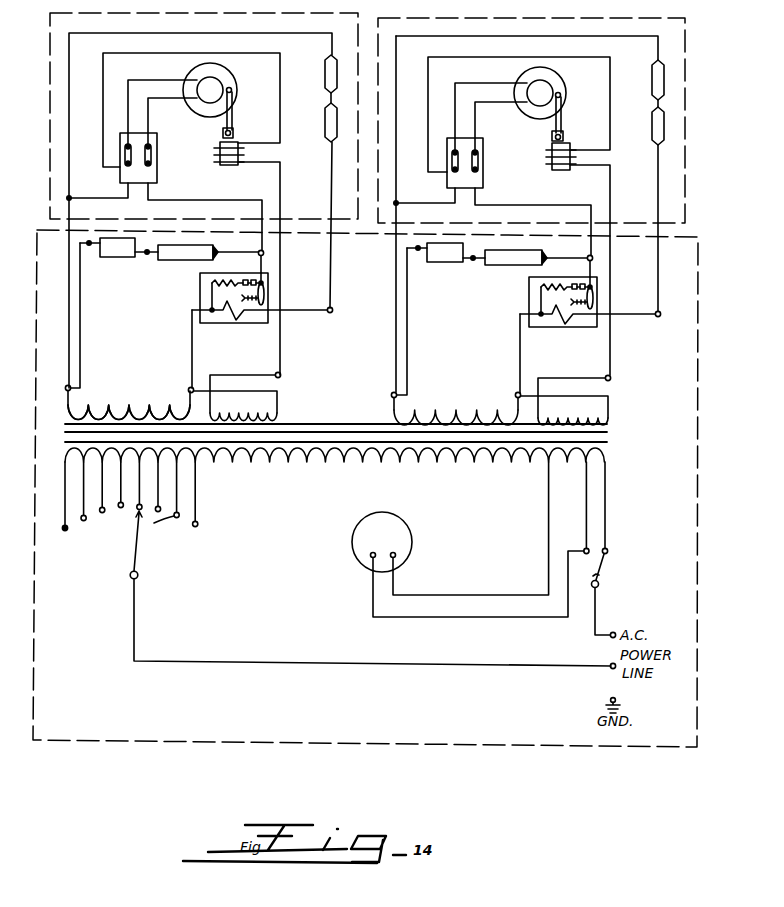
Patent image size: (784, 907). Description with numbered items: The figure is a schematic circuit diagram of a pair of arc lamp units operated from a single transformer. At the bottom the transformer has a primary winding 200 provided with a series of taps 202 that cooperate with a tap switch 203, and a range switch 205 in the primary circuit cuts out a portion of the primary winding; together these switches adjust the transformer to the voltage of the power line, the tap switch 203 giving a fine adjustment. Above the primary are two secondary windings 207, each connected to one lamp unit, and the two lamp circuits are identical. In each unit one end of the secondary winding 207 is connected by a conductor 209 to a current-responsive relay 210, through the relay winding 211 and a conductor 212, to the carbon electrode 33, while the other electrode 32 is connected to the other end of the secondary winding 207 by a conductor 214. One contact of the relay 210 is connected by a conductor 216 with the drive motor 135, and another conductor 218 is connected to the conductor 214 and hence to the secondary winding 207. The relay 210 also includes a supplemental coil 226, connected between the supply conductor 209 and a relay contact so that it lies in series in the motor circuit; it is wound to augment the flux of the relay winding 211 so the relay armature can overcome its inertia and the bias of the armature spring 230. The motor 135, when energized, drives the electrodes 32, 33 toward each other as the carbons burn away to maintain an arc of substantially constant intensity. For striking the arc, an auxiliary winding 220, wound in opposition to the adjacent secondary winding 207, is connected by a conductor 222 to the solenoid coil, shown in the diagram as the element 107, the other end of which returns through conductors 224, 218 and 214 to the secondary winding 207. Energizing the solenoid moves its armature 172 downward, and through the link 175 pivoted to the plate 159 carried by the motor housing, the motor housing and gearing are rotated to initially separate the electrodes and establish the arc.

The conductor 214 is at (541, 36).
The conductor 224 is at (508, 62).
The plate 159 is at (566, 72).
The electric motor 135 is at (527, 112).
The link 175 is at (568, 118).
The armature 172 is at (568, 138).
The solenoid coil 107 is at (552, 154).
The electrode 32 is at (653, 78).
The electrode 33 is at (653, 140).
The conductor 218 is at (441, 193).
The conductor 216 is at (546, 193).
The conductor 222 is at (616, 256).
The conductor 212 is at (658, 294).
The supplemental coil 226 is at (535, 294).
The armature spring 230 is at (584, 307).
The conductor 209 is at (520, 346).
The current-responsive relay 210 is at (593, 337).
The relay winding 211 is at (562, 320).
The secondary winding 207 is at (136, 393).
The auxiliary winding 220 is at (588, 424).
The primary winding 200 is at (475, 466).
The taps 202 is at (194, 538).
The tap switch 203 is at (135, 563).
The range switch 205 is at (600, 578).